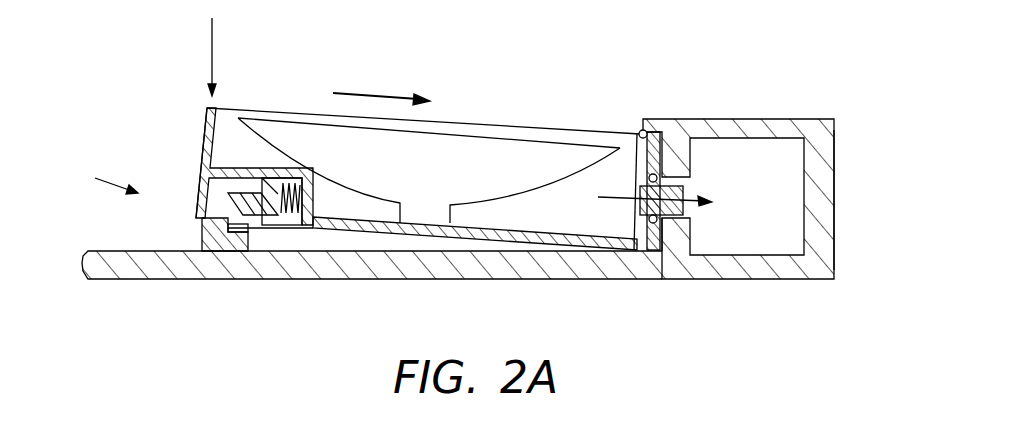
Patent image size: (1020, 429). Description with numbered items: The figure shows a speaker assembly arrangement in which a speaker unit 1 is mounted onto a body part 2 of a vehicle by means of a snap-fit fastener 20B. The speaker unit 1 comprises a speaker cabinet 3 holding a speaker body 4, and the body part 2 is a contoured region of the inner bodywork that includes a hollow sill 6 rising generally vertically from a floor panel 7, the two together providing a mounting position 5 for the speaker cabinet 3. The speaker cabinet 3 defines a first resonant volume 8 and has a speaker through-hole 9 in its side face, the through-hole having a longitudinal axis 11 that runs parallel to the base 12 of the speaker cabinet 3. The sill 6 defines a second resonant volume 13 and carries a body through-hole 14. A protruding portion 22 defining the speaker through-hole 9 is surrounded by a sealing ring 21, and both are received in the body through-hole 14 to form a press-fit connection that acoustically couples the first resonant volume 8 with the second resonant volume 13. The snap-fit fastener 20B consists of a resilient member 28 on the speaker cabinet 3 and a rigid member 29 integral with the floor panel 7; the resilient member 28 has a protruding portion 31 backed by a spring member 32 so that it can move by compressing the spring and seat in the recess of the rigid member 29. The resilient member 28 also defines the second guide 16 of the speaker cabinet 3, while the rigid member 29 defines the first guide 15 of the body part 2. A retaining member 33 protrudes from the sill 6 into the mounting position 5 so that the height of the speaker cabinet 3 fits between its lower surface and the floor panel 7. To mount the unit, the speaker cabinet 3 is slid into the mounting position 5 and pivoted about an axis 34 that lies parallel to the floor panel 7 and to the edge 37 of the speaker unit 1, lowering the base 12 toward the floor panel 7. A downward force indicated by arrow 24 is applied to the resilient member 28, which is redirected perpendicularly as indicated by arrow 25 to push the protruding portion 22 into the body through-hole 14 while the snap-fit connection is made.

The speaker unit 1 is at (262, 109).
The body part 2 is at (806, 120).
The speaker cabinet 3 is at (201, 168).
The speaker body 4 is at (463, 135).
The mounting position 5 is at (338, 239).
The sill 6 is at (836, 158).
The floor panel 7 is at (383, 252).
The first resonant volume 8 is at (572, 232).
The speaker through-hole 9 is at (646, 196).
The longitudinal axis 11 is at (703, 213).
The base 12 is at (407, 230).
The second resonant volume 13 is at (722, 163).
The body through-hole 14 is at (692, 182).
The first guide 15 is at (229, 230).
The second guide 16 is at (199, 164).
The snap-fit fastener 20B is at (92, 180).
The sealing ring 21 is at (651, 224).
The protruding portion 22 is at (668, 228).
The arrow 24 is at (213, 54).
The arrow 25 is at (363, 92).
The resilient member 28 is at (270, 215).
The rigid member 29 is at (200, 235).
The protruding portion 31 is at (233, 197).
The spring member 32 is at (308, 170).
The retaining member 33 is at (644, 127).
The axis 34 is at (658, 127).
The edge 37 is at (640, 130).